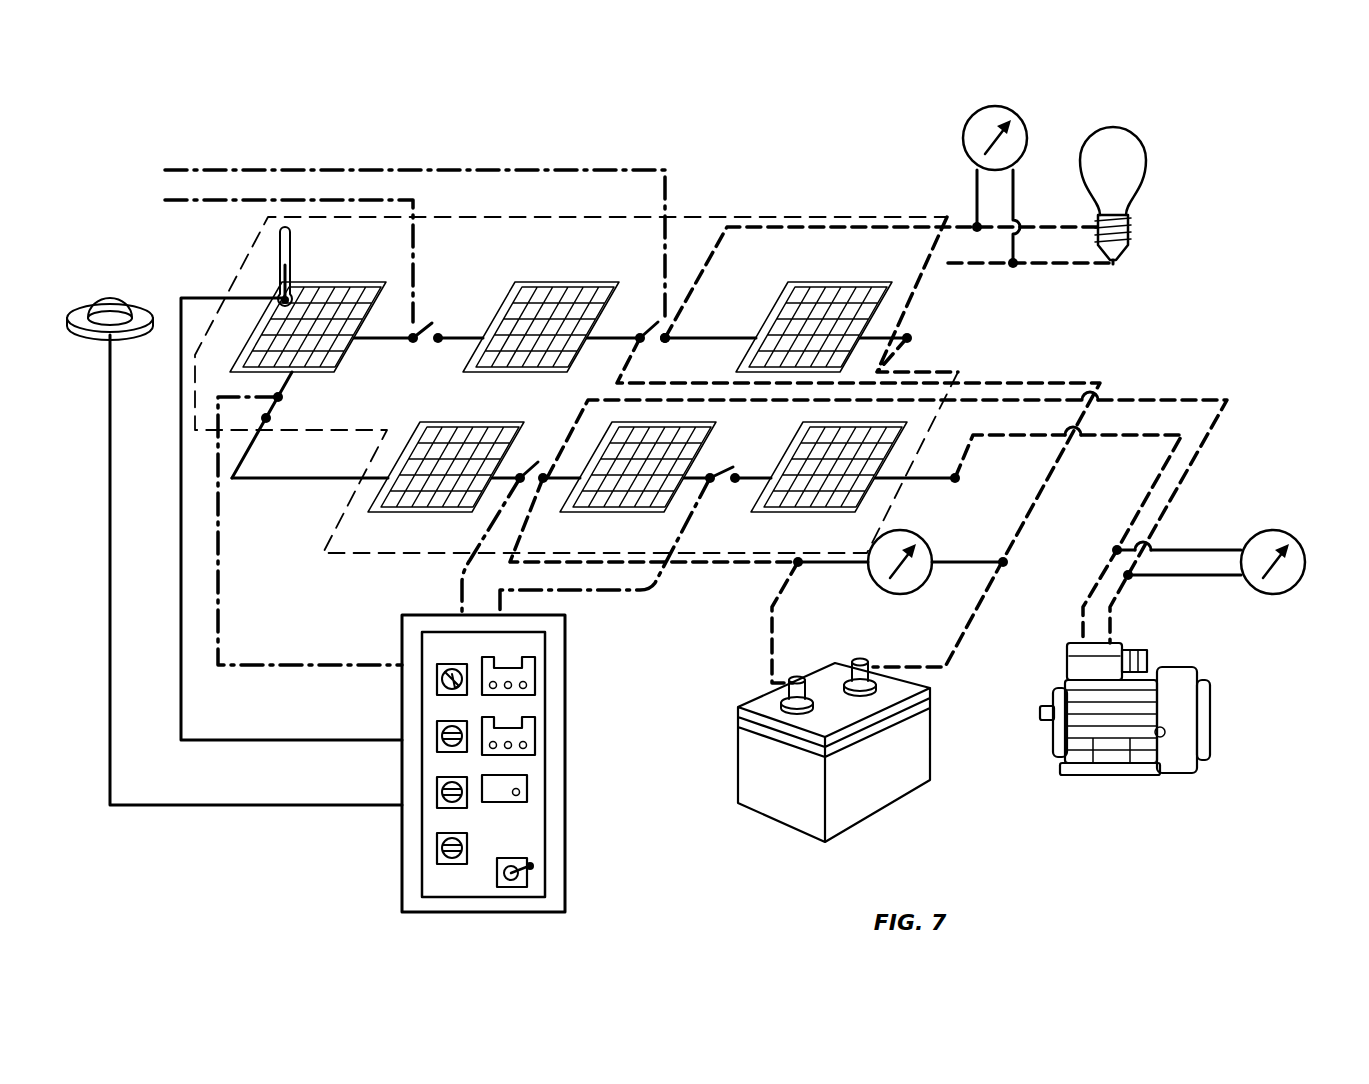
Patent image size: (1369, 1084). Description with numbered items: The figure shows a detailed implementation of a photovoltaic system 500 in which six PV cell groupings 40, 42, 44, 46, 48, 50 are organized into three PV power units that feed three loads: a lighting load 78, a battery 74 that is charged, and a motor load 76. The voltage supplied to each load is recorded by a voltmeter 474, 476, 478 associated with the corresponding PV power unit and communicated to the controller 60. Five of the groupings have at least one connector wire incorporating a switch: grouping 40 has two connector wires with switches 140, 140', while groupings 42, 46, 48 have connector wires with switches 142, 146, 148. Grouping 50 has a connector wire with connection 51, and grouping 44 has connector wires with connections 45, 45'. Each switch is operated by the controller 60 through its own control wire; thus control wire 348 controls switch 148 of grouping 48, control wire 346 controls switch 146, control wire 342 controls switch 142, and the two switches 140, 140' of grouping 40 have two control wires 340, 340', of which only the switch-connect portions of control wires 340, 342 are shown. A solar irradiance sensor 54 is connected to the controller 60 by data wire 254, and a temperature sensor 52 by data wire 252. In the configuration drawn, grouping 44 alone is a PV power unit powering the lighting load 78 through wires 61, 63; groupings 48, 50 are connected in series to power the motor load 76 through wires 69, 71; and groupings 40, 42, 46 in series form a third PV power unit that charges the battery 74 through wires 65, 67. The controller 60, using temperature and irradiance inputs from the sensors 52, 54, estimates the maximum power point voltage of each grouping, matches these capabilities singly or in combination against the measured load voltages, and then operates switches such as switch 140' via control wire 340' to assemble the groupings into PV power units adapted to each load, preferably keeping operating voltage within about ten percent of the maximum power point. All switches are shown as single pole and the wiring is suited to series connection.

The PV cell grouping 40 is at (309, 275).
The PV cell grouping 42 is at (551, 275).
The PV cell grouping 44 is at (826, 275).
The PV cell grouping 46 is at (411, 545).
The PV cell grouping 48 is at (606, 545).
The PV cell grouping 50 is at (796, 545).
The connection 45 is at (940, 294).
The connection 45' is at (710, 309).
The connection 51 is at (958, 478).
The temperature sensor 52 is at (283, 283).
The solar irradiance sensor 54 is at (85, 316).
The controller 60 is at (565, 830).
The wire 61 is at (820, 226).
The wire 63 is at (1100, 265).
The wire 65 is at (1028, 382).
The wire 67 is at (735, 570).
The wire 69 is at (1150, 399).
The wire 71 is at (1135, 437).
The battery 74 is at (932, 757).
The motor load 76 is at (1210, 730).
The lighting load 78 is at (1140, 158).
The switch 140 is at (460, 295).
The switch 140' is at (329, 400).
The switch 142 is at (638, 330).
The switch 146 is at (538, 464).
The switch 148 is at (733, 470).
The data wire 252 is at (288, 740).
The data wire 254 is at (225, 805).
The control wire 340 is at (265, 261).
The control wire 340' is at (310, 531).
The control wire 342 is at (270, 168).
The control wire 346 is at (468, 567).
The control wire 348 is at (598, 597).
The voltmeter 474 is at (912, 548).
The voltmeter 476 is at (1273, 530).
The voltmeter 478 is at (1022, 125).
The PV system 500 is at (590, 216).